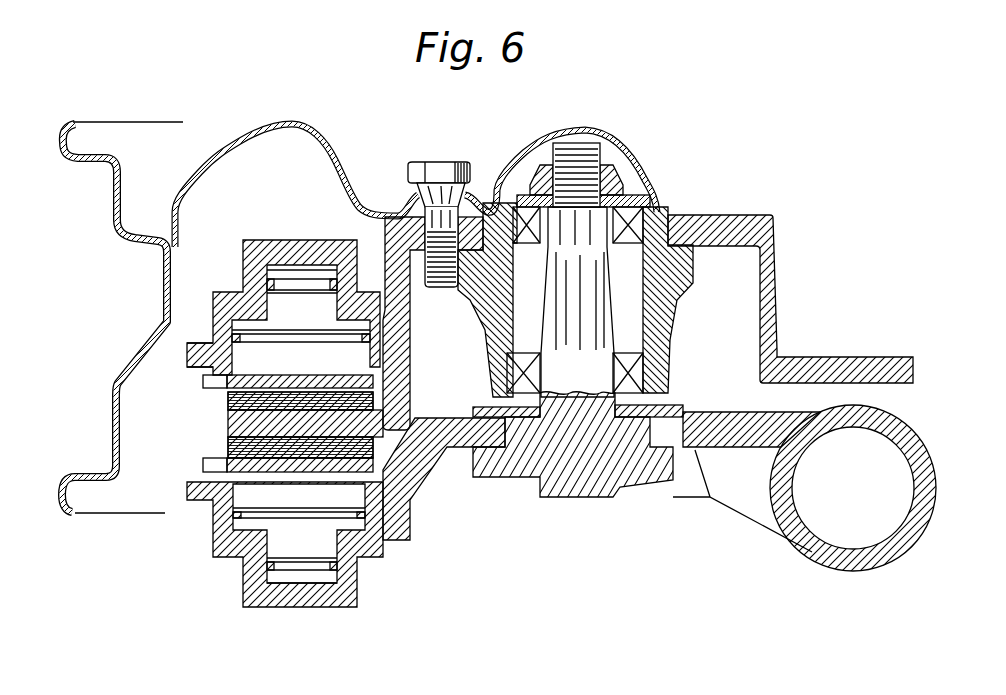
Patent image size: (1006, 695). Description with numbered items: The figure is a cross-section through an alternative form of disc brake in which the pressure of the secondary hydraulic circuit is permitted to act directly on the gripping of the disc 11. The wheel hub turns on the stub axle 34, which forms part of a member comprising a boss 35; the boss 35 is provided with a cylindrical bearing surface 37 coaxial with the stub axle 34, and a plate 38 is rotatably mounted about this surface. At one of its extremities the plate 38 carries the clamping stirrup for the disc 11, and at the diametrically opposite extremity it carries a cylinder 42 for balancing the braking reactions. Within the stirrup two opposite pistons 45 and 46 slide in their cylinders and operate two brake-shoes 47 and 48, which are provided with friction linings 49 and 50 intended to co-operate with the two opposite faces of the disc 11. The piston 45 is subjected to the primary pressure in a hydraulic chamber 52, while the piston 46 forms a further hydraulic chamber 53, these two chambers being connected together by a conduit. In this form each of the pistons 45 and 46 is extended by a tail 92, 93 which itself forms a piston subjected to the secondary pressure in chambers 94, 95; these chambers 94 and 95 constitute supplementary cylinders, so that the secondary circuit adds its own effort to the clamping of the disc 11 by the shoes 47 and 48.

The disc 11 is at (232, 423).
The stub axle 34 is at (552, 306).
The boss 35 is at (505, 470).
The cylindrical bearing surface 37 is at (498, 433).
The plate 38 is at (410, 490).
The cylinder 42 is at (933, 513).
The piston 45 is at (240, 353).
The piston 46 is at (233, 500).
The brake-shoe 47 is at (207, 382).
The brake-shoe 48 is at (207, 464).
The friction lining 49 is at (327, 397).
The friction lining 50 is at (334, 448).
The hydraulic chamber 52 is at (215, 318).
The hydraulic chamber 53 is at (240, 533).
The tail 92 is at (273, 299).
The tail 93 is at (273, 552).
The chamber 94 is at (280, 265).
The chamber 95 is at (273, 585).